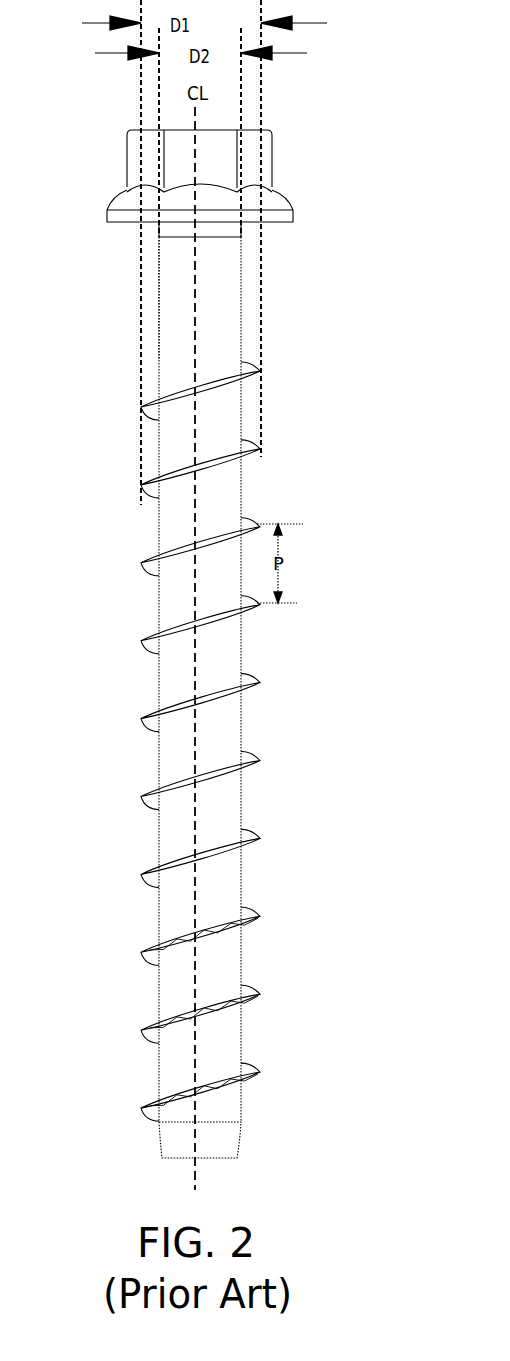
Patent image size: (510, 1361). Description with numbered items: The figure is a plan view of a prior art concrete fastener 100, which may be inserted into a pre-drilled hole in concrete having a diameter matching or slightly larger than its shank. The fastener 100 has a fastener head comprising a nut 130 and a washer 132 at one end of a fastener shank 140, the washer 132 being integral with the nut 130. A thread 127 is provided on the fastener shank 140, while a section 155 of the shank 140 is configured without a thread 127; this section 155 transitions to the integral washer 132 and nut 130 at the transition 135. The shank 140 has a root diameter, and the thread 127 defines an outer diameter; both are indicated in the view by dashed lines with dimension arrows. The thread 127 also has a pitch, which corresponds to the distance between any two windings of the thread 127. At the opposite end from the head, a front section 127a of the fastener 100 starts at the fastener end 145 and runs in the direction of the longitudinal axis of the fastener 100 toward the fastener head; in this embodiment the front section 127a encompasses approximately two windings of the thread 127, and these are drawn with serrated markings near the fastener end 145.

The concrete fastener 100 is at (168, 120).
The nut 130 is at (261, 148).
The washer 132 is at (285, 212).
The transition 135 is at (257, 238).
The fastener shank 140 is at (242, 322).
The section 155 is at (169, 295).
The thread 127 is at (143, 798).
The front section 127a is at (143, 958).
The fastener end 145 is at (257, 1157).